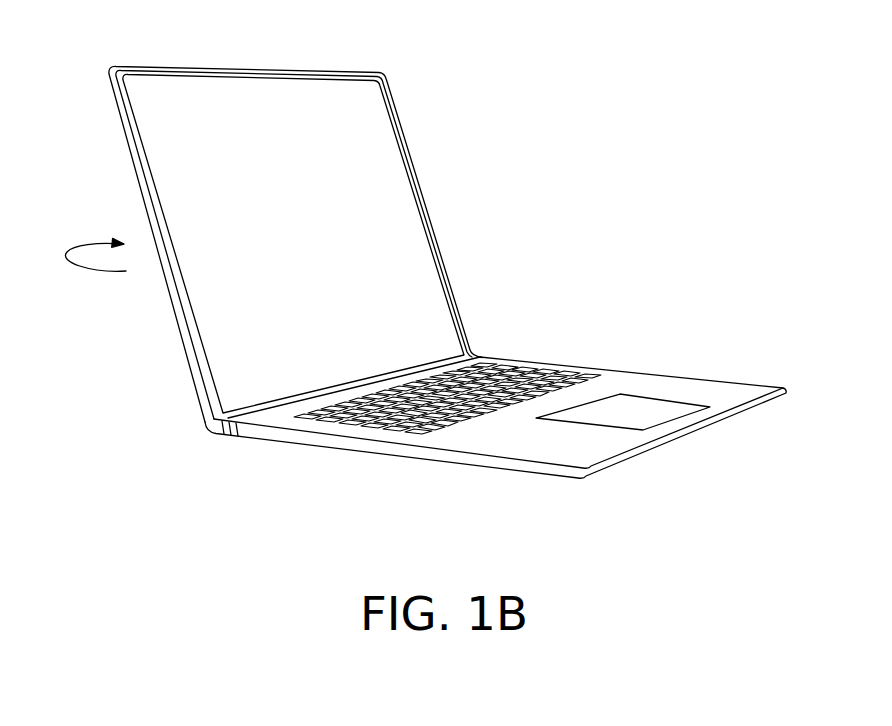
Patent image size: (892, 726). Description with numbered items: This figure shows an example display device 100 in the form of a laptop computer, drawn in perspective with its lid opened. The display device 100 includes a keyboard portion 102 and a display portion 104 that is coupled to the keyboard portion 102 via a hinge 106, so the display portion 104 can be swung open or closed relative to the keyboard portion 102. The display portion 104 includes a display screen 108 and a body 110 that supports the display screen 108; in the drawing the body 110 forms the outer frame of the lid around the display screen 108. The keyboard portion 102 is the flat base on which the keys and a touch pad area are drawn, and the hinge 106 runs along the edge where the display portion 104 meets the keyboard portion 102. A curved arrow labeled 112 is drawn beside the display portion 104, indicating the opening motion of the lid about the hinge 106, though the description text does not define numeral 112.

The computing device 100 is at (421, 243).
The base 102 is at (666, 369).
The lid 104 is at (272, 219).
The hinge 106 is at (433, 358).
The display 108 is at (376, 192).
The lid housing edge 110 is at (114, 66).
The rotation direction of lid 112 is at (112, 263).